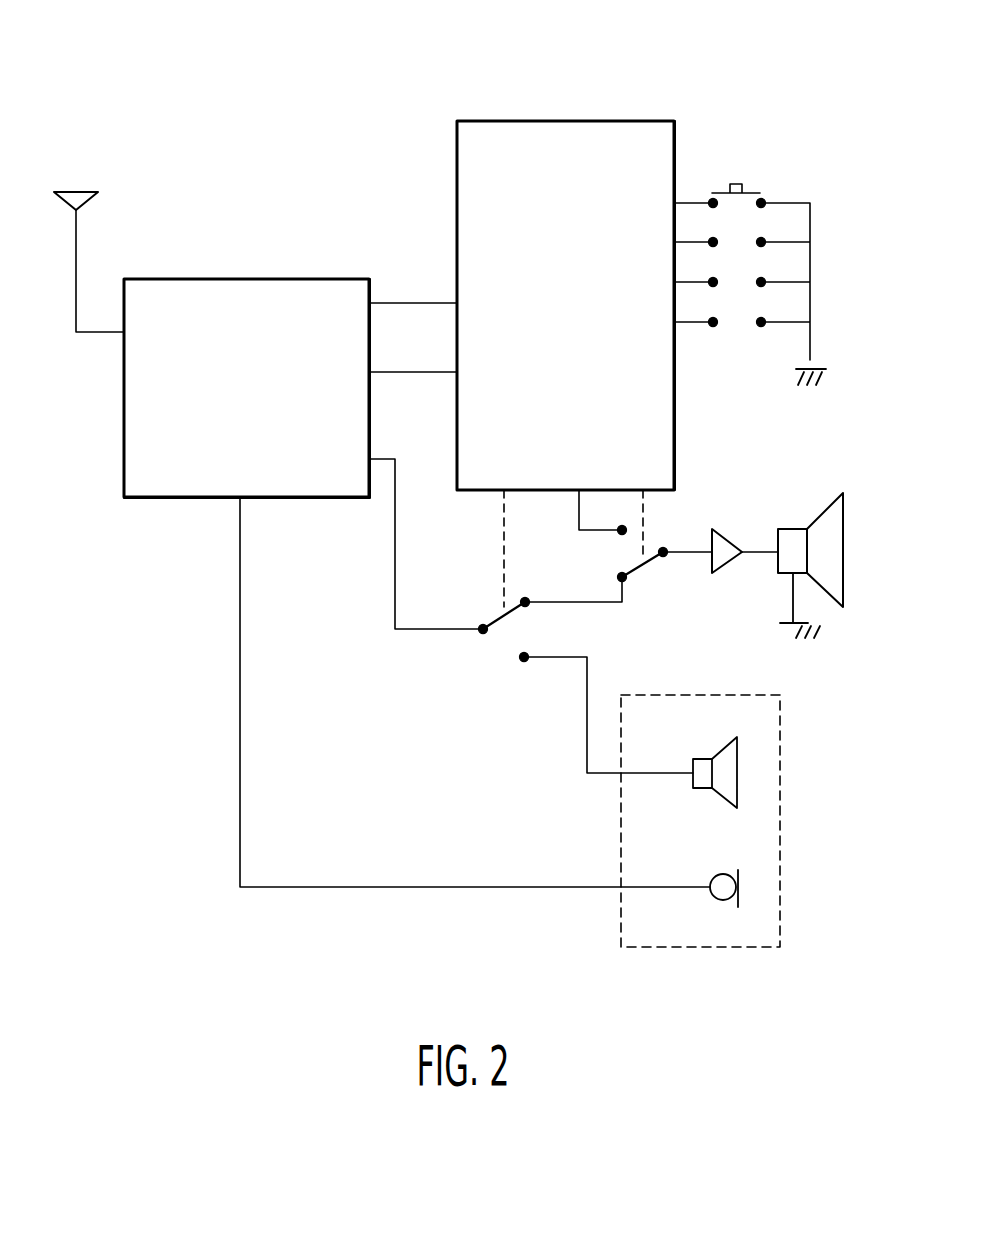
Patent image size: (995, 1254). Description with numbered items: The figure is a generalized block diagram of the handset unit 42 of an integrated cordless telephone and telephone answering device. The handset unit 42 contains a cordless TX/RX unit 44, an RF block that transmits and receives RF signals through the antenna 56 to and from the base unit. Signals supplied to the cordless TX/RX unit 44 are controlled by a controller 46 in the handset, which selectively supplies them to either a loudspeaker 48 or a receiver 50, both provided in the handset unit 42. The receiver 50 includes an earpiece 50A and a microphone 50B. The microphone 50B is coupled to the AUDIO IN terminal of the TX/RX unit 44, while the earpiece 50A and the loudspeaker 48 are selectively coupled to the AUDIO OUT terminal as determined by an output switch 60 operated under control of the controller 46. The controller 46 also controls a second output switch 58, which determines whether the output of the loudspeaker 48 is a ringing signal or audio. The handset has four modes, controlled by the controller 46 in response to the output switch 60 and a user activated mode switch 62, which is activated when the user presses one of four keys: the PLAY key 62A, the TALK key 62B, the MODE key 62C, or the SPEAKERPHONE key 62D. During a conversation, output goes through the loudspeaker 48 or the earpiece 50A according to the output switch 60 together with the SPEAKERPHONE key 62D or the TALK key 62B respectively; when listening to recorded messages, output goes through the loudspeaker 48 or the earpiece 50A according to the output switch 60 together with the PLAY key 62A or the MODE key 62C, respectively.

The handset unit 42 is at (493, 63).
The cordless TX/RX unit 44 is at (228, 277).
The controller 46 is at (456, 169).
The loudspeaker 48 is at (797, 528).
The receiver 50 is at (713, 950).
The earpiece 50A is at (693, 773).
The microphone 50B is at (710, 882).
The antenna 56 is at (80, 192).
The output switch 58 is at (650, 567).
The output switch 60 is at (503, 610).
The mode switch 62 is at (757, 186).
The PLAY key 62A is at (797, 203).
The TALK key 62B is at (783, 242).
The MODE key 62C is at (783, 282).
The SPEAKERPHONE key 62D is at (783, 322).